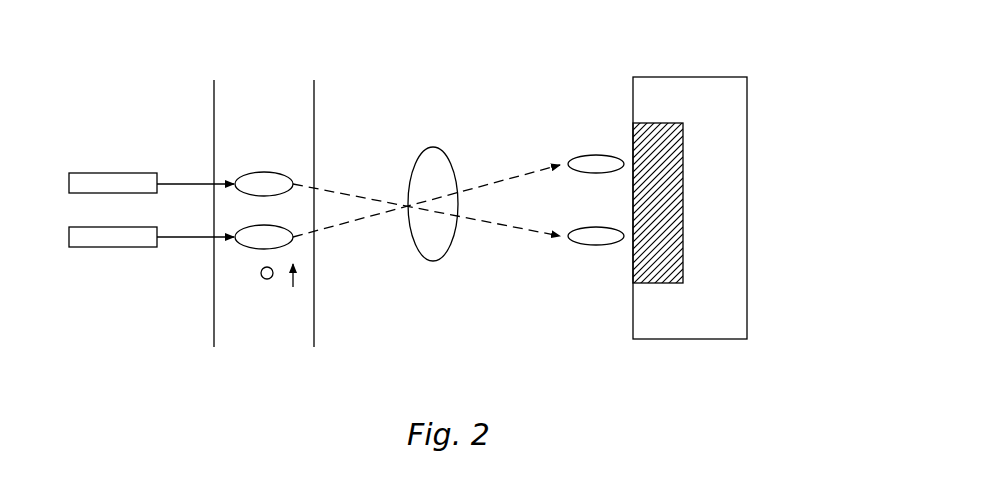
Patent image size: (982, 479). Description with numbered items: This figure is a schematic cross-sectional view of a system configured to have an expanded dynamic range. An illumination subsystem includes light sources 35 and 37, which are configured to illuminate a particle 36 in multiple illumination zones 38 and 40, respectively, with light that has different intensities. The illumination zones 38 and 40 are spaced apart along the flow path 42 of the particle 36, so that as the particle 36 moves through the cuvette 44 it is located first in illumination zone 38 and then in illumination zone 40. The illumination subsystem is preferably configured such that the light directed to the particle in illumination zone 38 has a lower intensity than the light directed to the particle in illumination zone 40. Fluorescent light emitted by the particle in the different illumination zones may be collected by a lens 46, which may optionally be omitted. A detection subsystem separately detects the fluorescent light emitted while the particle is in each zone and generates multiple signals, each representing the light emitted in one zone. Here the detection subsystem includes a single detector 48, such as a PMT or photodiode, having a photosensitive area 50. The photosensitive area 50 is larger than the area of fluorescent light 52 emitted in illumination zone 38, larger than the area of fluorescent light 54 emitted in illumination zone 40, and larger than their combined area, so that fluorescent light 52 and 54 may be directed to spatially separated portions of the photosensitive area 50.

The light source 35 is at (118, 248).
The particle 36 is at (262, 277).
The light source 37 is at (110, 172).
The illumination zone 38 is at (240, 231).
The illumination zone 40 is at (240, 176).
The flow path 42 is at (293, 285).
The cuvette 44 is at (314, 333).
The lens 46 is at (445, 257).
The detector 48 is at (738, 197).
The photosensitive area 50 is at (685, 123).
The fluorescent light 52 is at (594, 155).
The fluorescent light 54 is at (594, 246).